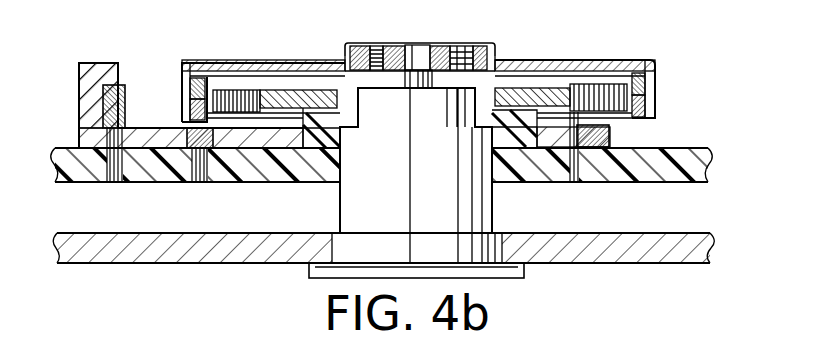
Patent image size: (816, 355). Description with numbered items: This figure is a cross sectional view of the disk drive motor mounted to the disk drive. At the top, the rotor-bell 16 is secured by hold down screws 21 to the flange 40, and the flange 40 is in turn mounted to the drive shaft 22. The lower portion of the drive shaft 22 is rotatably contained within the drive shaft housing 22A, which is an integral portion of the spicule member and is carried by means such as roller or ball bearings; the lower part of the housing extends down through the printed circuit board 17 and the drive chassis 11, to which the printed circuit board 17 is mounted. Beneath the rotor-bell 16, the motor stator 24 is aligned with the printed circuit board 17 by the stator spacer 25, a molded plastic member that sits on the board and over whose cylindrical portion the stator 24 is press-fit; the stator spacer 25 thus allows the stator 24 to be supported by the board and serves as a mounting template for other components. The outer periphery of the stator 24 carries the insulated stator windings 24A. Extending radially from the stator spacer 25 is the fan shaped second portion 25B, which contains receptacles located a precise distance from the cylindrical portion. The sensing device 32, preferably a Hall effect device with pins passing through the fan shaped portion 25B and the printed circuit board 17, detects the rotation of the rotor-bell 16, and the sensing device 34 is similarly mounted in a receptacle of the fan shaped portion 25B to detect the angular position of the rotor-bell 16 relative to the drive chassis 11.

The drive chassis 11 is at (714, 243).
The rotor-bell 16 is at (655, 72).
The printed circuit board 17 is at (711, 164).
The hold down screws 21 is at (360, 46).
The drive shaft 22 is at (407, 78).
The drive shaft housing 22A is at (486, 193).
The motor stator 24 is at (304, 96).
The stator windings 24A is at (229, 88).
The stator spacer 25 is at (609, 133).
The fan shaped second portion 25B is at (79, 115).
The sensing device 32 is at (187, 128).
The sensing device 34 is at (125, 98).
The flange 40 is at (437, 46).